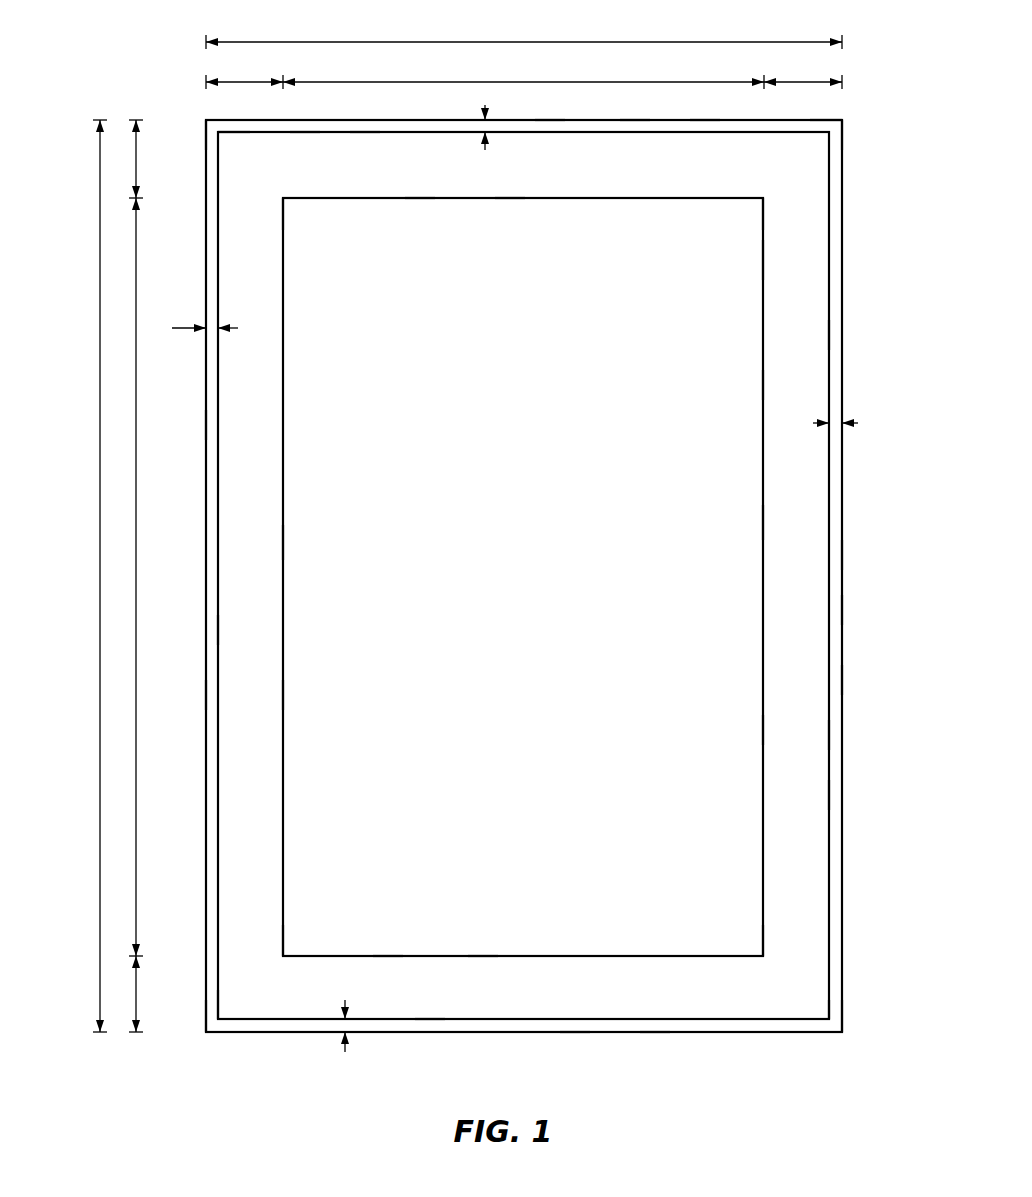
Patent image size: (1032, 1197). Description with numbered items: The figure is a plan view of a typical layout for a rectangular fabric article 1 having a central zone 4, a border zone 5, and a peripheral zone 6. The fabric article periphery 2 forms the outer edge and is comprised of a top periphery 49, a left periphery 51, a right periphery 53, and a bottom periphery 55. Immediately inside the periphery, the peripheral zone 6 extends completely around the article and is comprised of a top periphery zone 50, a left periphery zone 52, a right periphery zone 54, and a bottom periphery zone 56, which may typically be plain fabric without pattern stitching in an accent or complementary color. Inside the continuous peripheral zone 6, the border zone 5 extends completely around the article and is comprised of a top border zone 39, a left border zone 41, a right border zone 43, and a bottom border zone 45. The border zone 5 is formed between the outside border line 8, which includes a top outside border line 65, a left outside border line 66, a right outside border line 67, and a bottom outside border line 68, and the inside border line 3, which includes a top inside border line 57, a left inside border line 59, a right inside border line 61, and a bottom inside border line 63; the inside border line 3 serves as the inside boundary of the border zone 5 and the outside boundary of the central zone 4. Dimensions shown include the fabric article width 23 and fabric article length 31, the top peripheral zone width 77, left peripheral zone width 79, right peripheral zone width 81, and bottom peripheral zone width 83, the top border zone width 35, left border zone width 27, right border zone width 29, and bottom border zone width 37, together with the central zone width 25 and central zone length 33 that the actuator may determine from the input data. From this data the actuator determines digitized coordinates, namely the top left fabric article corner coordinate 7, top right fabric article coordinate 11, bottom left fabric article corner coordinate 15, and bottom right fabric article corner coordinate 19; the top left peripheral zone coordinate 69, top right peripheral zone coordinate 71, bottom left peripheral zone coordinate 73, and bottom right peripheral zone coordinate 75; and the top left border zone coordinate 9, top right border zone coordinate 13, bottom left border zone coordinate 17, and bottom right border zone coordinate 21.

The fabric article 1 is at (842, 502).
The fabric article periphery 2 is at (842, 552).
The inside border line 3 is at (762, 386).
The central zone 4 is at (635, 333).
The border zone 5 is at (812, 348).
The peripheral zone 6 is at (705, 125).
The top left fabric article corner coordinate 7 is at (206, 120).
The outside border line 8 is at (305, 132).
The top left border zone coordinate 9 is at (284, 200).
The top right fabric article coordinate 11 is at (844, 118).
The top right border zone coordinate 13 is at (762, 199).
The bottom left fabric article corner coordinate 15 is at (206, 1032).
The bottom left border zone coordinate 17 is at (284, 955).
The bottom right fabric article corner coordinate 19 is at (842, 1032).
The bottom right border zone coordinate 21 is at (762, 955).
The fabric article width 23 is at (473, 42).
The central zone width 25 is at (476, 82).
The left border zone width 27 is at (248, 82).
The right border zone width 29 is at (806, 82).
The fabric article length 31 is at (100, 538).
The central zone length 33 is at (138, 538).
The top border zone width 35 is at (152, 159).
The bottom border zone width 37 is at (136, 1006).
The top border zone 39 is at (503, 173).
The left border zone 41 is at (253, 557).
The right border zone 43 is at (783, 520).
The bottom border zone 45 is at (483, 975).
The top periphery 49 is at (548, 120).
The top periphery zone 50 is at (633, 125).
The left periphery 51 is at (206, 424).
The left periphery zone 52 is at (211, 693).
The right periphery 53 is at (842, 611).
The right periphery zone 54 is at (835, 678).
The bottom periphery 55 is at (657, 1032).
The bottom periphery zone 56 is at (574, 1027).
The top inside border line 57 is at (420, 199).
The left inside border line 59 is at (283, 695).
The right inside border line 61 is at (762, 729).
The bottom inside border line 63 is at (388, 955).
The top outside border line 65 is at (363, 132).
The left outside border line 66 is at (218, 630).
The right outside border line 67 is at (829, 737).
The bottom outside border line 68 is at (431, 1019).
The top left peripheral zone coordinate 69 is at (225, 120).
The top right peripheral zone coordinate 71 is at (830, 120).
The bottom left peripheral zone coordinate 73 is at (218, 1019).
The bottom right peripheral zone coordinate 75 is at (829, 1032).
The top peripheral zone width 77 is at (485, 105).
The left peripheral zone width 79 is at (172, 328).
The right peripheral zone width 81 is at (858, 423).
The bottom peripheral zone width 83 is at (345, 1052).